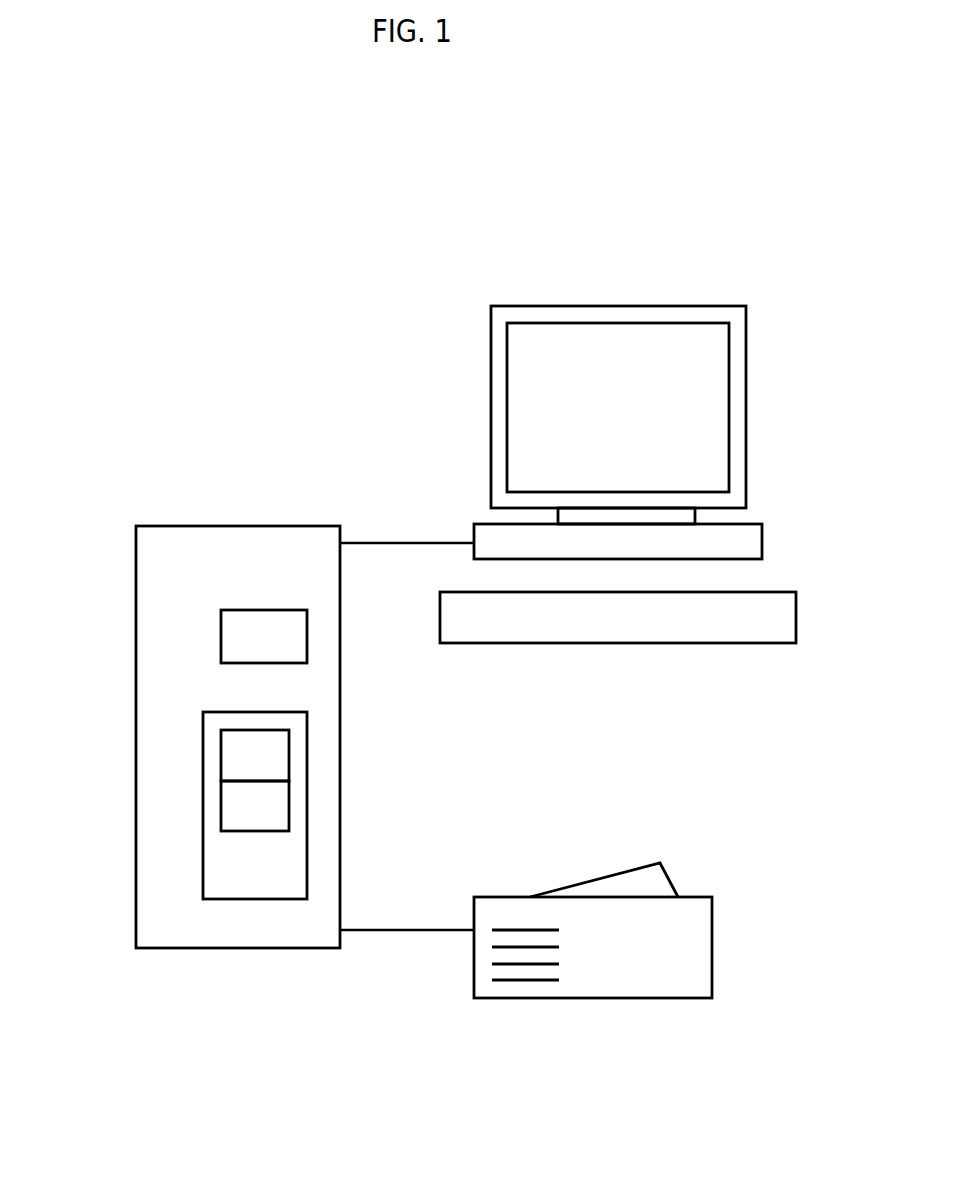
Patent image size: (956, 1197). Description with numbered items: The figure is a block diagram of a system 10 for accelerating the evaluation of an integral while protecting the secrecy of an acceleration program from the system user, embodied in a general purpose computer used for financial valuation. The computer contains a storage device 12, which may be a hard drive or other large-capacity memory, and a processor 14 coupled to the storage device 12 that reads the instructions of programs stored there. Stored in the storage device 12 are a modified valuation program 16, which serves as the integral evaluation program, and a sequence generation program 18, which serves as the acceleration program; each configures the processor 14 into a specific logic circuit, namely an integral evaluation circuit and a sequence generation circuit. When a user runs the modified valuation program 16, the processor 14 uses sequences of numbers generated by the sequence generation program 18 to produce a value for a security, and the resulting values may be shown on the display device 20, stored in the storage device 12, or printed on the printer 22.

The system 10 is at (378, 455).
The storage device 12 is at (290, 799).
The processor 14 is at (298, 638).
The modified valuation program 16 is at (233, 750).
The sequence generation program 18 is at (230, 807).
The display device 20 is at (665, 429).
The printer 22 is at (685, 932).